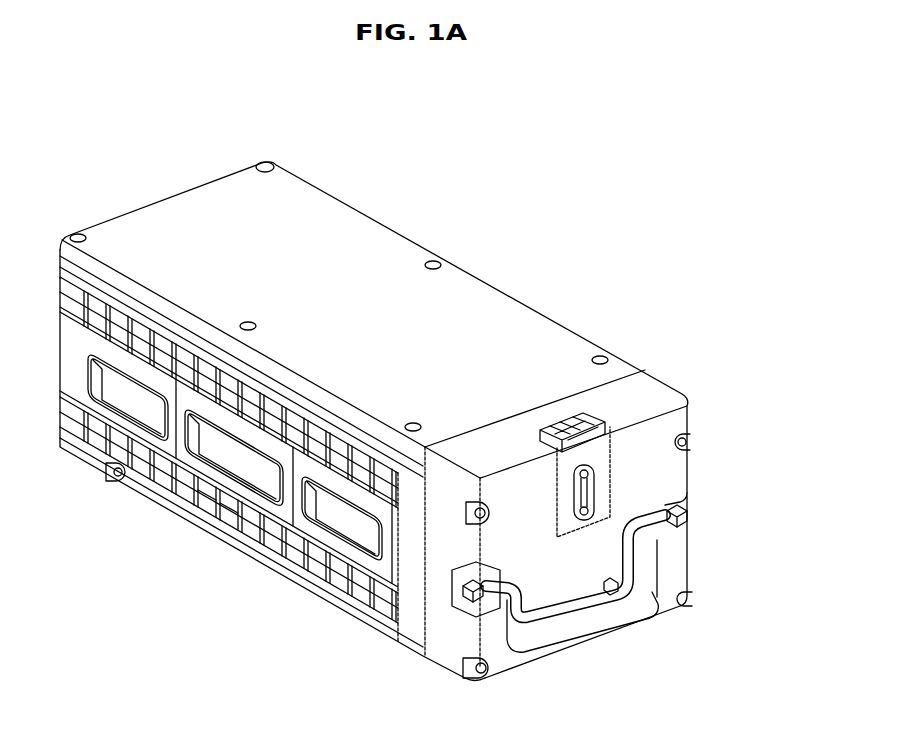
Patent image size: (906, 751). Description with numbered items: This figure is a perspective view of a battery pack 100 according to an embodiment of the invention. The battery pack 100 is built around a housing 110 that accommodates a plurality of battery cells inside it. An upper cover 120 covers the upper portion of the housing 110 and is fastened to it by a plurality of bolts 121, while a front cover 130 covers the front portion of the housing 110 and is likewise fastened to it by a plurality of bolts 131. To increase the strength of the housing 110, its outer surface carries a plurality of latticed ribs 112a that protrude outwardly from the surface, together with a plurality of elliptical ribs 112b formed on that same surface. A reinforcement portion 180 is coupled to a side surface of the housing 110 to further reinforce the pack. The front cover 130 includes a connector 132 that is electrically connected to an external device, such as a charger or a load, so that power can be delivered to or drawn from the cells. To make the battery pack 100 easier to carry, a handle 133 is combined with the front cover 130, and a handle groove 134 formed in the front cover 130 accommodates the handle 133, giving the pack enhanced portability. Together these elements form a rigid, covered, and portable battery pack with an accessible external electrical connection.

The battery pack 100 is at (145, 175).
The housing 110 is at (258, 568).
The latticed ribs 112a is at (220, 507).
The elliptical ribs 112b is at (168, 486).
The upper cover 120 is at (322, 208).
The bolts 121 is at (268, 162).
The front cover 130 is at (660, 402).
The bolts 131 is at (690, 443).
The connector 132 is at (596, 417).
The handle 133 is at (613, 595).
The handle groove 134 is at (570, 622).
The reinforcement portion 180 is at (110, 474).